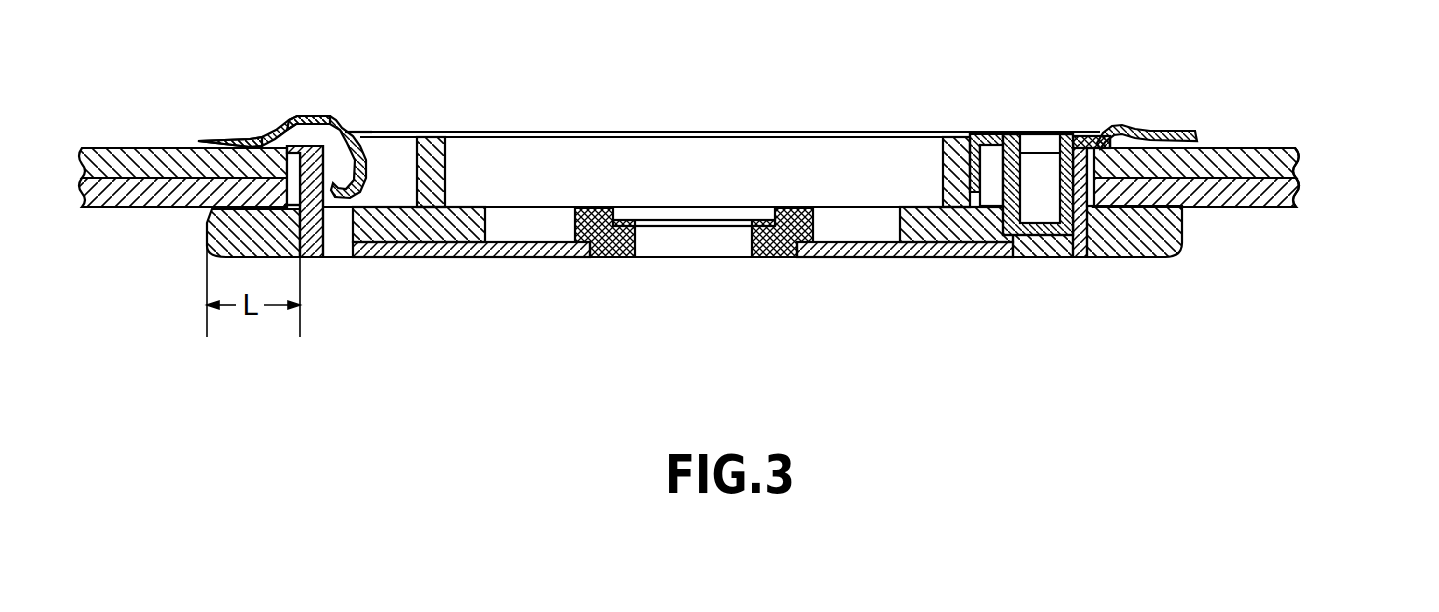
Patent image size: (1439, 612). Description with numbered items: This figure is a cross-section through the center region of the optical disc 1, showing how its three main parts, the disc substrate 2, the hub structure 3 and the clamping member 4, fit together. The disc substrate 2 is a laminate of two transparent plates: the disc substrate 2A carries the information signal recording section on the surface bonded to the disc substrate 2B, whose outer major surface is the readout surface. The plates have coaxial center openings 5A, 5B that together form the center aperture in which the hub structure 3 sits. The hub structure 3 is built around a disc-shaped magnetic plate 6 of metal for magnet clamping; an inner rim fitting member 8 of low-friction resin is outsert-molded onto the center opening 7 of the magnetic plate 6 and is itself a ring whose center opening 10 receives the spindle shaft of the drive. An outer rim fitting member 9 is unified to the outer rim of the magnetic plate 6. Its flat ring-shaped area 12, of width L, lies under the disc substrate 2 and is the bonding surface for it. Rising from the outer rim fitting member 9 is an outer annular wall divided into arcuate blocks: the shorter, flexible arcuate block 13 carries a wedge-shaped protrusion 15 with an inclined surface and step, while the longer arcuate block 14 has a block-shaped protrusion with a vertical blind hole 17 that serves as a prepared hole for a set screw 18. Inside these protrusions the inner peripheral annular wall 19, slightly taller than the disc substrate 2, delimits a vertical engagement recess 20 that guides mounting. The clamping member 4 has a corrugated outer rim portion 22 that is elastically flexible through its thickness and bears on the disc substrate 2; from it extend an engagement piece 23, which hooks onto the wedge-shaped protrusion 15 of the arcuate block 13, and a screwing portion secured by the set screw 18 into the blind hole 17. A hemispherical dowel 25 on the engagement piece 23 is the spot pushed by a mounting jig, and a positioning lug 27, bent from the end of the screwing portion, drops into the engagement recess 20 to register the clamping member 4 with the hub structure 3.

The optical disc 1 is at (1248, 62).
The disc substrate 2 is at (1388, 127).
The disc substrate 2A is at (1293, 207).
The disc substrate 2B is at (1293, 148).
The hub structure 3 is at (1152, 280).
The clamping member 4 is at (1157, 135).
The center opening 5A is at (1112, 258).
The center opening 5B is at (1205, 148).
The magnetic plate 6 is at (864, 258).
The center opening 7 is at (782, 258).
The inner rim fitting member 8 is at (600, 258).
The outer rim fitting member 9 is at (311, 232).
The center opening 10 is at (736, 258).
The flat ring-shaped area 12 is at (1172, 246).
The arcuate block 13 is at (343, 128).
The arcuate block 14 is at (1075, 133).
The wedge-shaped protrusion 15 is at (372, 137).
The blind hole 17 is at (1072, 258).
The set screw 18 is at (1047, 165).
The inner peripheral annular wall 19 is at (945, 165).
The engagement recess 20 is at (983, 130).
The outer rim portion 22 is at (223, 137).
The engagement piece 23 is at (402, 137).
The dowel 25 is at (312, 126).
The positioning lug 27 is at (1000, 195).